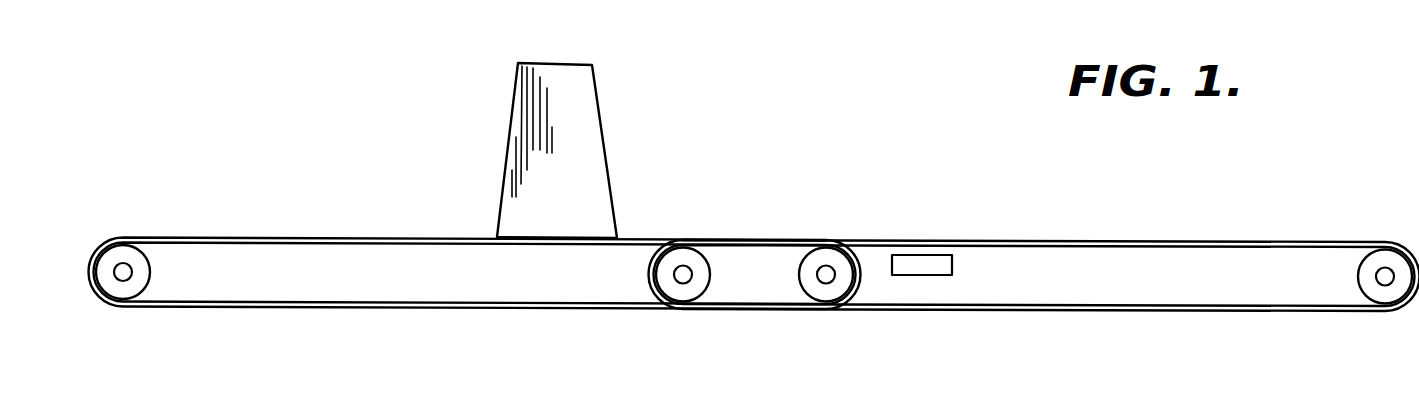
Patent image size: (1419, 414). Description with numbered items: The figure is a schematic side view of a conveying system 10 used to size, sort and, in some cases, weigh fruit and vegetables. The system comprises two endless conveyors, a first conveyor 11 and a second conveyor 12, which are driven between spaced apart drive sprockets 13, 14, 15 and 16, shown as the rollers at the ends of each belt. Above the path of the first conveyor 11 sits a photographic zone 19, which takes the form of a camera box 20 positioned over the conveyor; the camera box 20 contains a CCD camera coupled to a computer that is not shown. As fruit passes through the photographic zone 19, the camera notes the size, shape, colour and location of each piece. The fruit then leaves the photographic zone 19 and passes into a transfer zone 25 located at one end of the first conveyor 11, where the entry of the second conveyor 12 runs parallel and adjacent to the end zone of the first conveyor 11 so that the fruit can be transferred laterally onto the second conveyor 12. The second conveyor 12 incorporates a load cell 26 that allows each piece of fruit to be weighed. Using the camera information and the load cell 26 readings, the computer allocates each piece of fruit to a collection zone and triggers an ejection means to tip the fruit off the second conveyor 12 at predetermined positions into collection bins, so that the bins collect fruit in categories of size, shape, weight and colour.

The conveying system 10 is at (834, 146).
The first conveyor 11 is at (275, 241).
The second conveyor 12 is at (1122, 242).
The drive sprocket 13 is at (133, 291).
The drive sprocket 14 is at (828, 292).
The drive sprocket 15 is at (683, 292).
The drive sprocket 16 is at (1382, 293).
The photographic zone 19 is at (594, 74).
The camera box 20 is at (515, 182).
The transfer zone 25 is at (757, 235).
The load cell 26 is at (925, 270).